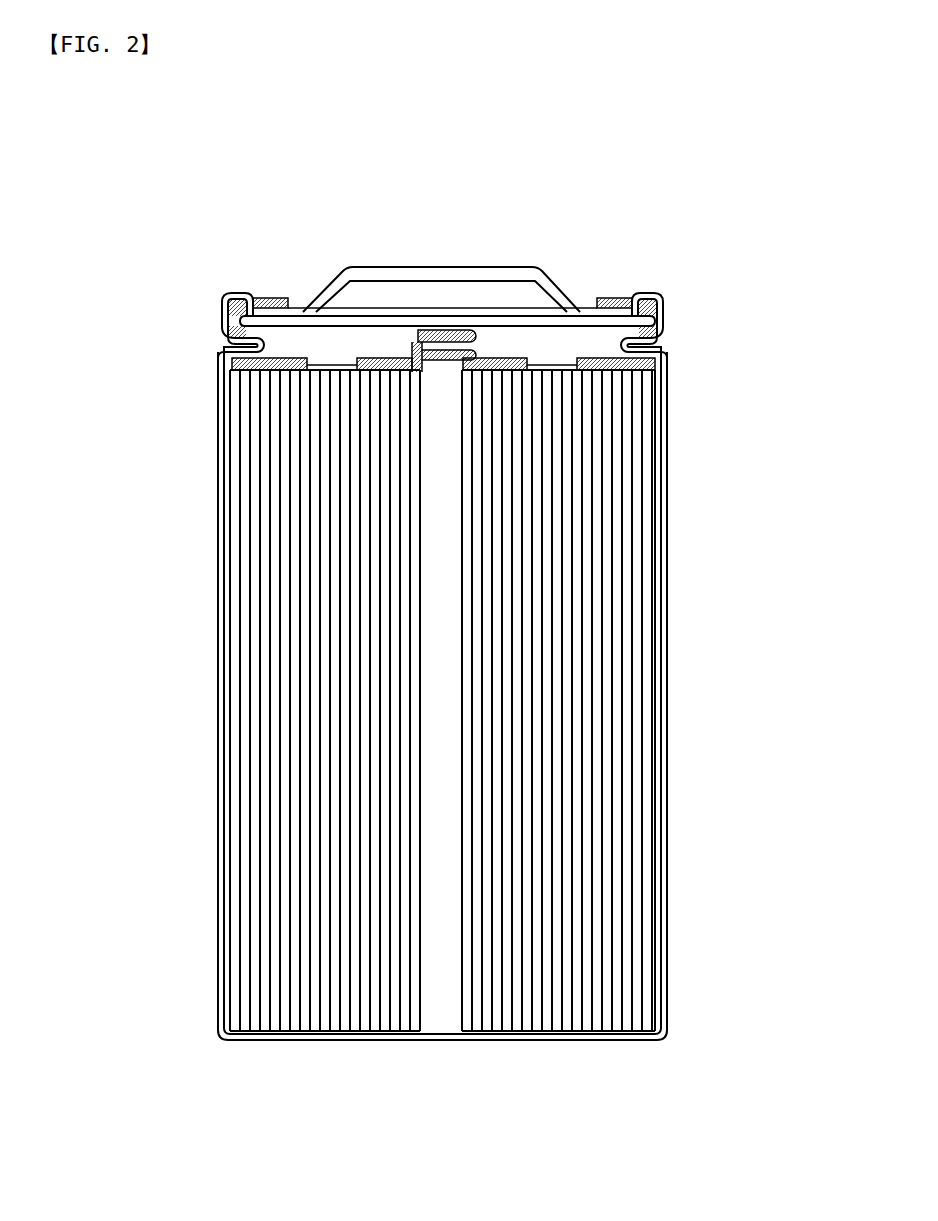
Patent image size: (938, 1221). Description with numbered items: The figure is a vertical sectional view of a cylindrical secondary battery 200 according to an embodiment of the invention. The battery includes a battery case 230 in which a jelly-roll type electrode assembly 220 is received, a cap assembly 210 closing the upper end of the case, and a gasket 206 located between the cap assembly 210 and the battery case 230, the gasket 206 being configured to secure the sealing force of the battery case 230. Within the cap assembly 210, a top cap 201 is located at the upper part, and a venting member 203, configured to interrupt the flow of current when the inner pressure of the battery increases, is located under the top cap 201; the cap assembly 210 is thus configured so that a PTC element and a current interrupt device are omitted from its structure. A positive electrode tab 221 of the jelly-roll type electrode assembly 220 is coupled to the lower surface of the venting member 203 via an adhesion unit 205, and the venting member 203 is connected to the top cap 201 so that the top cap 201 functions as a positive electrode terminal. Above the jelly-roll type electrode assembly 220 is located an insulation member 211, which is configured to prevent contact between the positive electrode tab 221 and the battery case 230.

The cylindrical secondary battery 200 is at (247, 203).
The top cap 201 is at (668, 306).
The venting member 203 is at (668, 328).
The adhesion unit 205 is at (443, 310).
The gasket 206 is at (220, 313).
The cap assembly 210 is at (545, 308).
The insulation member 211 is at (660, 360).
The jelly-roll type electrode assembly 220 is at (653, 760).
The positive electrode tab 221 is at (405, 343).
The battery case 230 is at (667, 812).